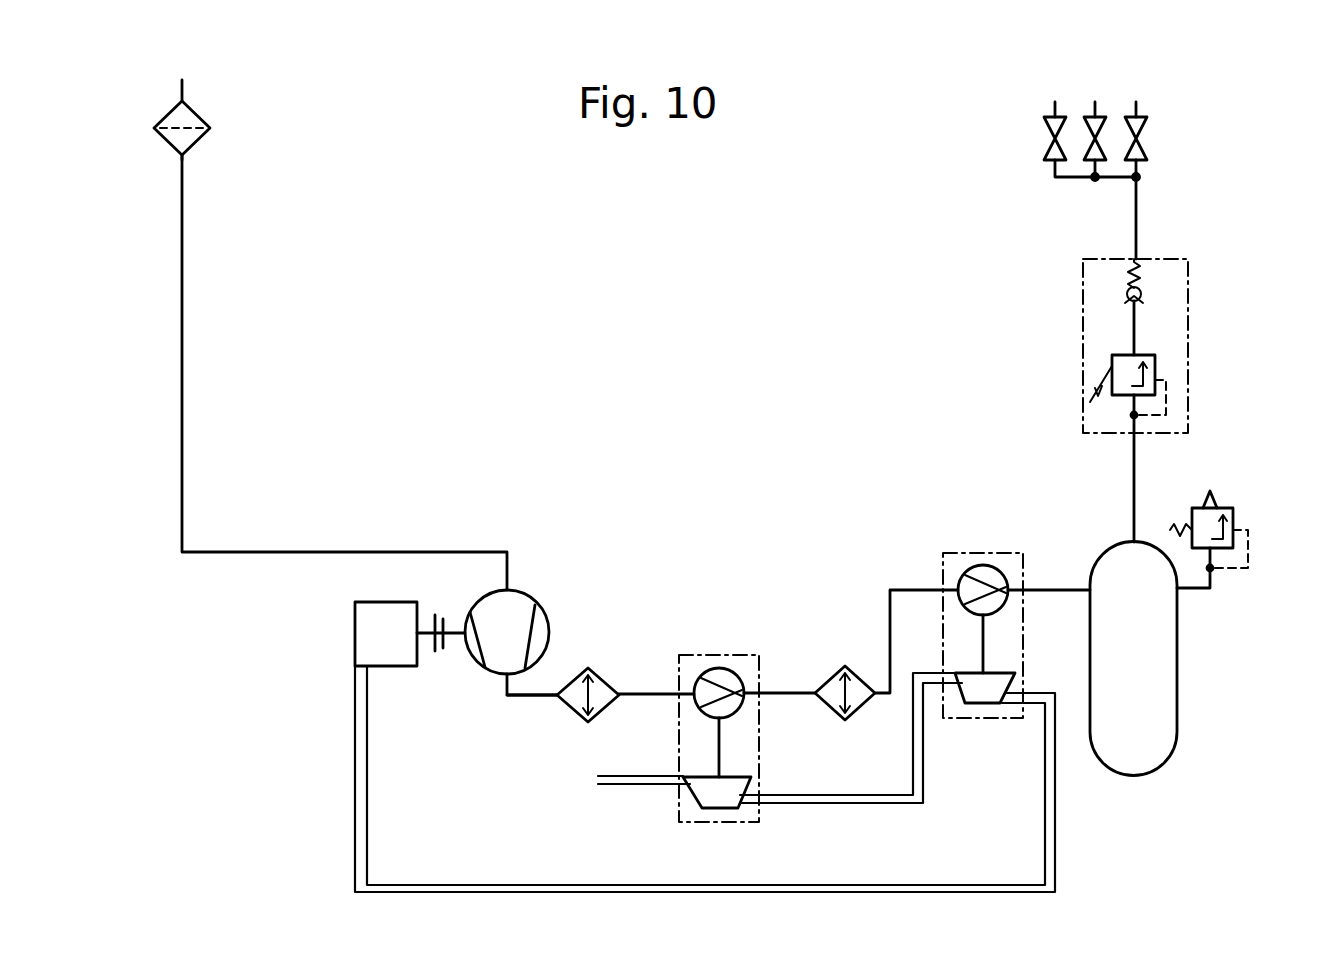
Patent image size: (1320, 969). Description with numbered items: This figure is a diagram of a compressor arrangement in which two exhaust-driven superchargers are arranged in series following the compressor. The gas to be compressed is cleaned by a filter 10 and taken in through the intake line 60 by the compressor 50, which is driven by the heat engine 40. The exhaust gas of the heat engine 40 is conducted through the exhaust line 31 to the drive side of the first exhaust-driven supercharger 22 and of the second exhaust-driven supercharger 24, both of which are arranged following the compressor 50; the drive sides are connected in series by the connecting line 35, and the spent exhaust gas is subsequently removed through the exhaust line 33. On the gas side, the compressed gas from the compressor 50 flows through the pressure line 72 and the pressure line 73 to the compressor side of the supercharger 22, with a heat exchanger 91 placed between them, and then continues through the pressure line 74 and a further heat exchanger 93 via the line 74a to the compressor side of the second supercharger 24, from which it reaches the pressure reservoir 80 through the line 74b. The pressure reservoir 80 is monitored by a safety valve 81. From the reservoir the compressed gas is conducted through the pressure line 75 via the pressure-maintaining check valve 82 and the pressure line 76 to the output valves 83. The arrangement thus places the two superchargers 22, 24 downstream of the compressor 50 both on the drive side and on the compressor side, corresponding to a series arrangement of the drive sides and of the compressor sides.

The filter 10 is at (207, 125).
The intake line 60 is at (182, 322).
The heat engine 40 is at (355, 636).
The compressor 50 is at (548, 627).
The pressure line 72 is at (546, 700).
The heat exchanger 91 is at (588, 712).
The pressure line 73 is at (657, 694).
The exhaust-driven supercharger 22 is at (718, 668).
The exhaust line 33 is at (623, 790).
The turbine connecting line 35 is at (810, 806).
The pressure line 74 is at (802, 694).
The heat exchanger 93 is at (844, 718).
The line 74a is at (892, 591).
The exhaust-driven supercharger 24 is at (985, 565).
The line 74b is at (1050, 588).
The exhaust line 31 is at (518, 882).
The pressure reservoir 80 is at (1177, 673).
The pressure line 75 is at (1136, 470).
The pressure-maintaining check valve 82 is at (1156, 357).
The pressure line 76 is at (1138, 216).
The output valves 83 is at (1140, 139).
The safety valve 81 is at (1236, 515).